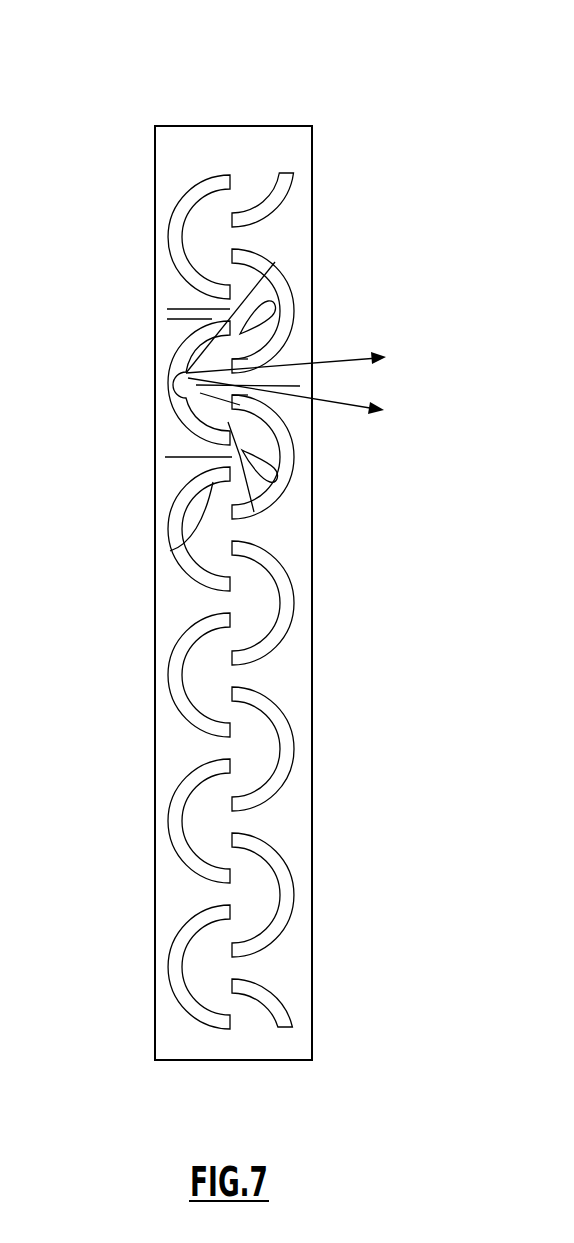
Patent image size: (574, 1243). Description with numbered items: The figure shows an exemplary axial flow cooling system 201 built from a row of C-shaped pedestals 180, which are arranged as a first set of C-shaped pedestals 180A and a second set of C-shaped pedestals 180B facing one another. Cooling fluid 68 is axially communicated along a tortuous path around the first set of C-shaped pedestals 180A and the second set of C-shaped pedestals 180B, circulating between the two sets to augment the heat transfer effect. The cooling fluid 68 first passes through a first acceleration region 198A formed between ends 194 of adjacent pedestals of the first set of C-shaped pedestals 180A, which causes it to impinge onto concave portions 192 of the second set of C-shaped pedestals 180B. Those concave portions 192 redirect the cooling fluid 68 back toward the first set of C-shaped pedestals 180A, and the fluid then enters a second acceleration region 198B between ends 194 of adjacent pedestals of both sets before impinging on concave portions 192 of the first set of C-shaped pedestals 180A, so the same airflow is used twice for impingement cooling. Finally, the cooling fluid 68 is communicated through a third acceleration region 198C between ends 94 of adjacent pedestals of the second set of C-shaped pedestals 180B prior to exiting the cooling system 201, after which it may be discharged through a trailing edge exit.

The cooling system 201 is at (314, 100).
The row of C-shaped pedestals 180 is at (229, 645).
The first set of C-shaped pedestals 180A is at (160, 646).
The second set of C-shaped pedestals 180B is at (275, 1042).
The ends 194 is at (226, 292).
The first acceleration region 198A is at (165, 320).
The second acceleration region 198B is at (275, 262).
The third acceleration region 198C is at (300, 386).
The concave portions 192 is at (272, 298).
The ends 94 is at (243, 366).
The cooling fluid 68 is at (343, 357).